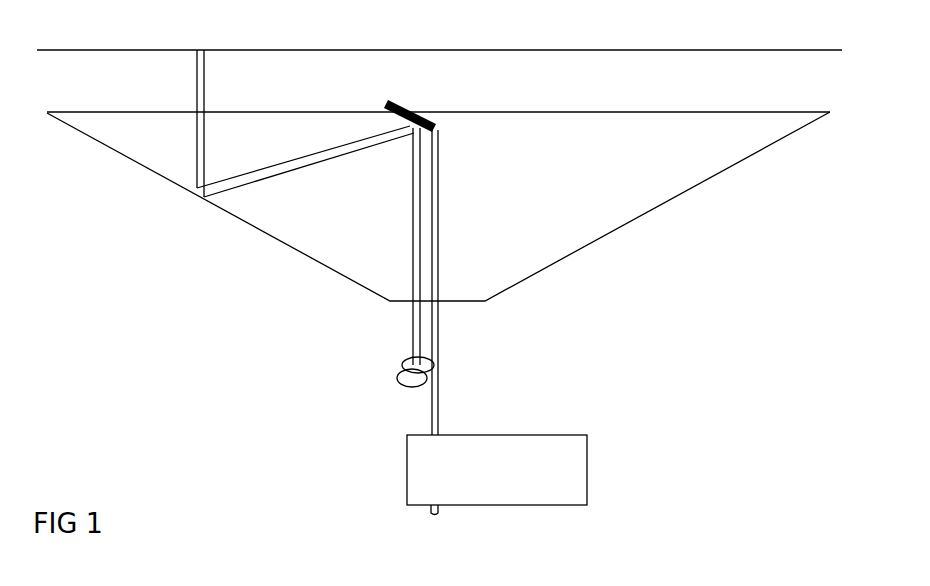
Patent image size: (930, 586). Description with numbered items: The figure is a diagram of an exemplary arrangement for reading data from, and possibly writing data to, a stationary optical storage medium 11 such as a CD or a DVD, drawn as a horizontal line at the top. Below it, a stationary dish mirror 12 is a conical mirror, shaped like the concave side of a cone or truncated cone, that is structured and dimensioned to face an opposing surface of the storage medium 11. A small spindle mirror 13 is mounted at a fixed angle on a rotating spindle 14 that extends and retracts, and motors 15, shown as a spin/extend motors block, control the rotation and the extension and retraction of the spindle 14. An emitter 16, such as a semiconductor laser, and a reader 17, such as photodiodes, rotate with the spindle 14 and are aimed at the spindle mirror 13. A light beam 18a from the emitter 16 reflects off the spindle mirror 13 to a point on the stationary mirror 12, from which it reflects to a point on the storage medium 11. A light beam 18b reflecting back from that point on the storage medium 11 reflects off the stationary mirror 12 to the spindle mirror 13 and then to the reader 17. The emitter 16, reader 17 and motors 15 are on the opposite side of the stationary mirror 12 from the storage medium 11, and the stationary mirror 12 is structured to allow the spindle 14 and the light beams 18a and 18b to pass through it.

The stationary optical storage medium 11 is at (425, 50).
The stationary dish mirror 12 is at (572, 255).
The spindle mirror 13 is at (398, 103).
The spindle 14 is at (440, 408).
The motors 15 is at (587, 474).
The emitter 16 is at (406, 388).
The reader 17 is at (402, 358).
The light beam 18a is at (196, 84).
The light beam 18b is at (208, 84).